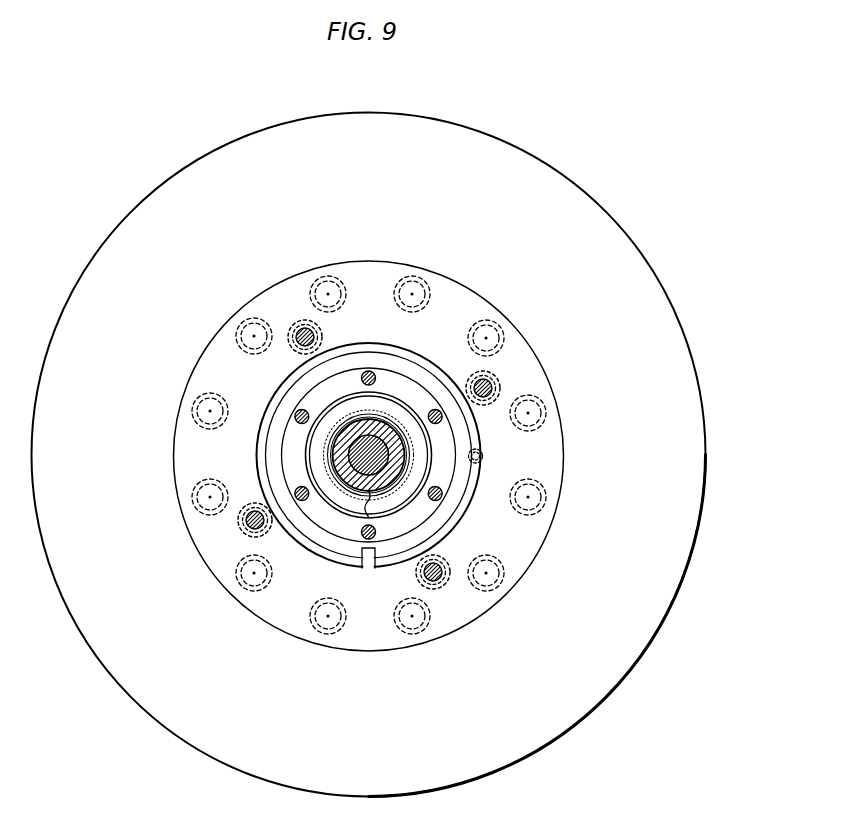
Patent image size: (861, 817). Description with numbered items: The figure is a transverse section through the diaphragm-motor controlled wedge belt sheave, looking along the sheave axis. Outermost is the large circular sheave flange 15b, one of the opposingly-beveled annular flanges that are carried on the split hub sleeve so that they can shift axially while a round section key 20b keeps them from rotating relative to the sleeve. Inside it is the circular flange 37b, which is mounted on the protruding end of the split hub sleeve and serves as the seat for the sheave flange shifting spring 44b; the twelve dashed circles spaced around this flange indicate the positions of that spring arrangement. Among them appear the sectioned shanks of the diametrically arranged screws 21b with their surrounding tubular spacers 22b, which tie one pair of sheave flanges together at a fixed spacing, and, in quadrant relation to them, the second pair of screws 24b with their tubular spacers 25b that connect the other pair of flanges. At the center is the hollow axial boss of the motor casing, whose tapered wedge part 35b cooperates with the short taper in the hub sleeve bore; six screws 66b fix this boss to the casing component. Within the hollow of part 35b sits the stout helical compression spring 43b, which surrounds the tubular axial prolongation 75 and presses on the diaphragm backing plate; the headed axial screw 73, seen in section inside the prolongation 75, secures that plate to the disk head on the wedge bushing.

The sheave flange 15b is at (377, 114).
The flange 37b is at (369, 261).
The tapered wedge part 35b is at (361, 369).
The helical compression spring 43b is at (313, 447).
The headed axial screw 73 is at (372, 434).
The tubular axial prolongation 75 is at (388, 435).
The screws 66b is at (372, 374).
The sheave flange shifting spring 44b is at (487, 320).
The round section key 20b is at (483, 457).
The screw 21b is at (489, 381).
The tubular spacer 22b is at (500, 388).
The screw 24b is at (306, 320).
The tubular spacer 25b is at (293, 352).